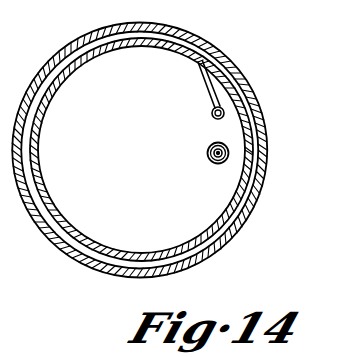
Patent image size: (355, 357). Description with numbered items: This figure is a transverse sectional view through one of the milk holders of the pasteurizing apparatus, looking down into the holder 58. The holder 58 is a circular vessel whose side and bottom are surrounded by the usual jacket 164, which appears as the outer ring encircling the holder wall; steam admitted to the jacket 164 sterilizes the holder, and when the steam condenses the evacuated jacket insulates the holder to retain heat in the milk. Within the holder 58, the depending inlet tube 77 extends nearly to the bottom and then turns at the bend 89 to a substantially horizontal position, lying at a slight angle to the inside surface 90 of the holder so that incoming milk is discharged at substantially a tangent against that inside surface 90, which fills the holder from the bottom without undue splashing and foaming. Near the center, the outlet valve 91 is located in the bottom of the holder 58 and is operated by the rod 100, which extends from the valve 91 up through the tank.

The holder 58 is at (141, 149).
The depending inlet tube 77 is at (211, 113).
The bend 89 is at (198, 62).
The inside surface 90 is at (129, 42).
The outlet valve 91 is at (208, 162).
The rod 100 is at (207, 151).
The jacket 164 is at (254, 216).